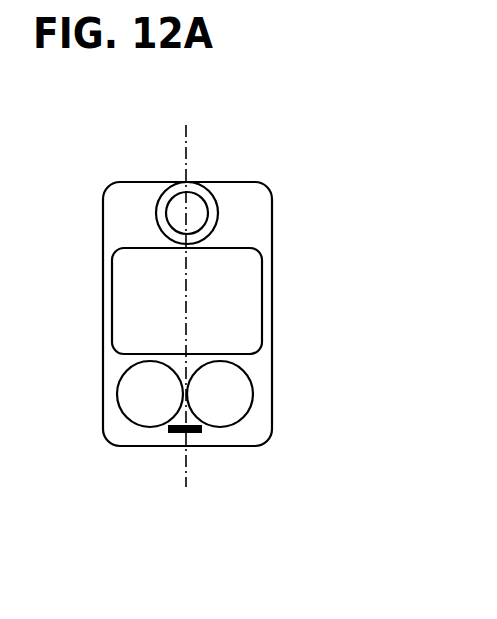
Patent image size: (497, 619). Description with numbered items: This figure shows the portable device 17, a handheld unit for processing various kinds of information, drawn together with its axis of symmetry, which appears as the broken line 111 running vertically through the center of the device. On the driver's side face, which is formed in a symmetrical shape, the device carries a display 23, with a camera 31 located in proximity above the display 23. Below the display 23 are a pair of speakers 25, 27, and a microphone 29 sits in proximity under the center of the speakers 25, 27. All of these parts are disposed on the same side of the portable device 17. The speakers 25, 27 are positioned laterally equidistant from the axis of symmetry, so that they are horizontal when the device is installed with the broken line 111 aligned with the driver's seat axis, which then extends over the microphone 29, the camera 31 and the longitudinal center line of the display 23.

The portable device 17 is at (146, 144).
The broken line 111 is at (185, 473).
The camera 31 is at (192, 205).
The display 23 is at (218, 278).
The speaker 25 is at (147, 408).
The speaker 27 is at (235, 402).
The microphone 29 is at (195, 432).